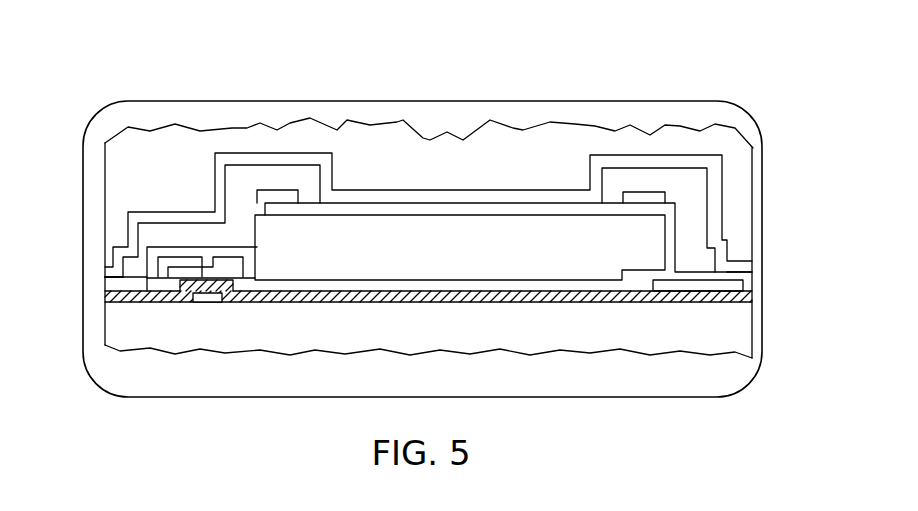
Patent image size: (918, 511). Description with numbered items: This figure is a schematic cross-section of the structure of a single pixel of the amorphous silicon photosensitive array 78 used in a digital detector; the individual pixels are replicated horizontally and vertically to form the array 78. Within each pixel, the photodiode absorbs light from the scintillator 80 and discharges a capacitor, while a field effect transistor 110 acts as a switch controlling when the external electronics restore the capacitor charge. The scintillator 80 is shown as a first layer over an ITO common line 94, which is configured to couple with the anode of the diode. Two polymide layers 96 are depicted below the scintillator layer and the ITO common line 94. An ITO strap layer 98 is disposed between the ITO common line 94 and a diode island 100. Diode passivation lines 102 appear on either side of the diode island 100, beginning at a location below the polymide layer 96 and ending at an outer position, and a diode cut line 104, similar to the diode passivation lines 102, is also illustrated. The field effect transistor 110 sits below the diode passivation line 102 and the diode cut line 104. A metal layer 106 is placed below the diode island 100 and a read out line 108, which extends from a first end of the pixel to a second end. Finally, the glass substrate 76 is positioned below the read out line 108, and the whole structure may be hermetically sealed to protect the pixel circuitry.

The glass substrate 76 is at (613, 340).
The amorphous silicon photosensitive array 78 is at (592, 82).
The scintillator 80 is at (430, 157).
The ITO common line 94 is at (507, 195).
The polymide layers 96 is at (240, 180).
The ITO strap layer 98 is at (333, 210).
The diode island 100 is at (385, 265).
The diode passivation lines 102 is at (117, 273).
The diode cut line 104 is at (177, 250).
The metal layer 106 is at (440, 291).
The read out line 108 is at (262, 298).
The field effect transistor 110 is at (168, 283).